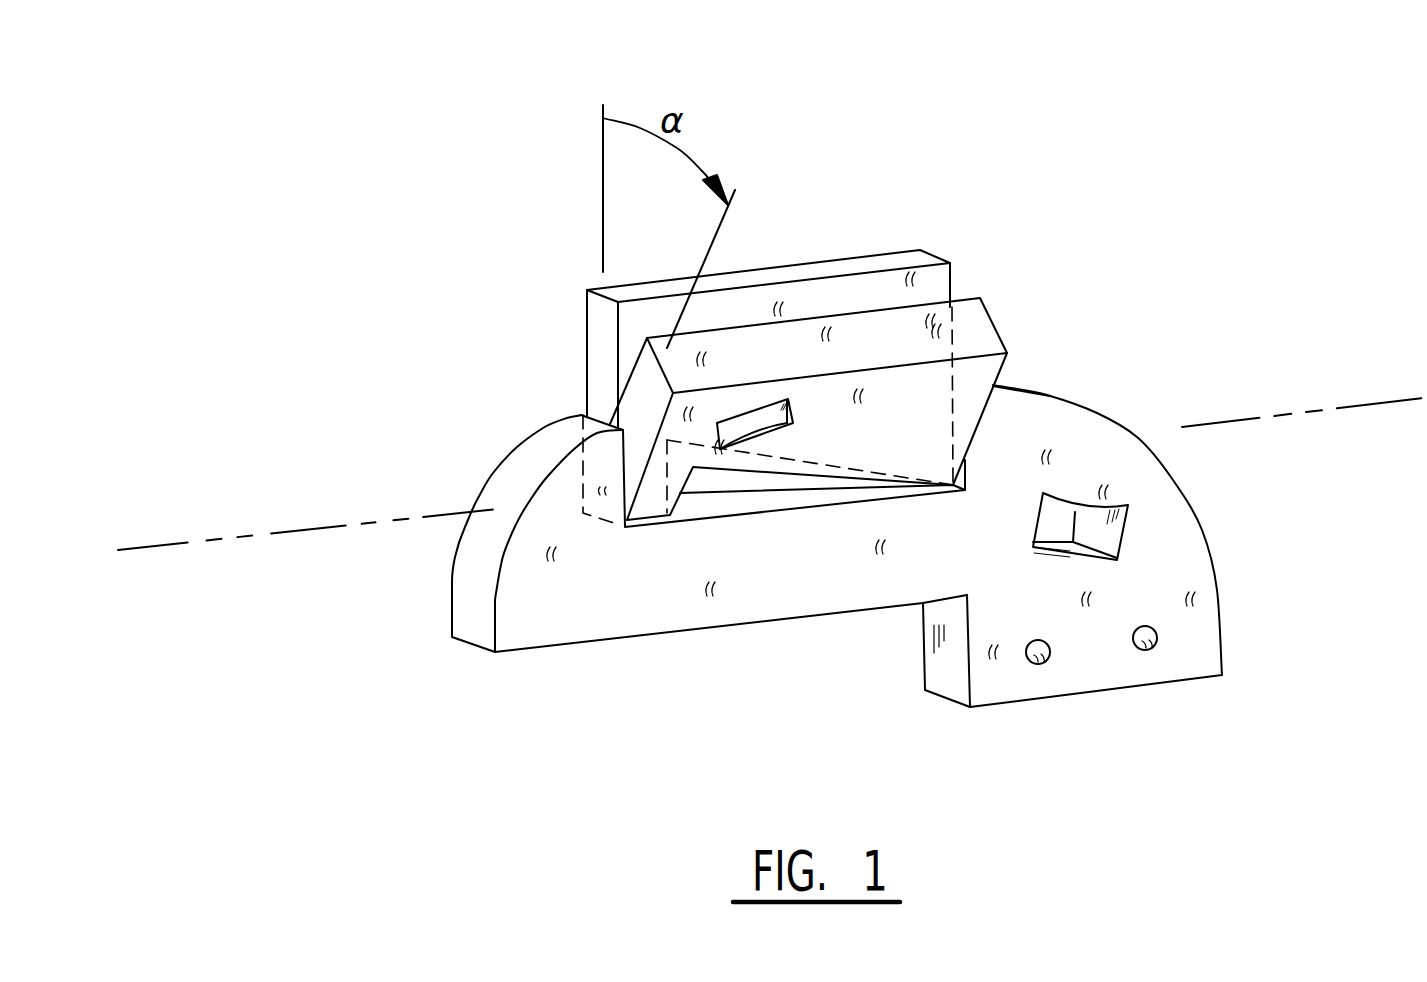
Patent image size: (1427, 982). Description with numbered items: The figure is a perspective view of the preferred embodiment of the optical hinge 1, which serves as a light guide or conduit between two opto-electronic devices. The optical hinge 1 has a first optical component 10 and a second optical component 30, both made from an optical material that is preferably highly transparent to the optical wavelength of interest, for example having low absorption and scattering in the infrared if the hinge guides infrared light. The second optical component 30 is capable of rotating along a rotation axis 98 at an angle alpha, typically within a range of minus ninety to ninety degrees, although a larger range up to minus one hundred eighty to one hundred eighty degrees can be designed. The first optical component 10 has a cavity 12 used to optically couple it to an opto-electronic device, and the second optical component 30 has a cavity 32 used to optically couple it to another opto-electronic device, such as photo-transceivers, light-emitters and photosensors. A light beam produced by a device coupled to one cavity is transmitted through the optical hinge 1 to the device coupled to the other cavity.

The optical hinge 1 is at (1228, 172).
The first optical component 10 is at (1137, 470).
The cavity 12 is at (1107, 533).
The second optical component 30 is at (885, 262).
The cavity 32 is at (778, 415).
The rotation axis 98 is at (310, 527).